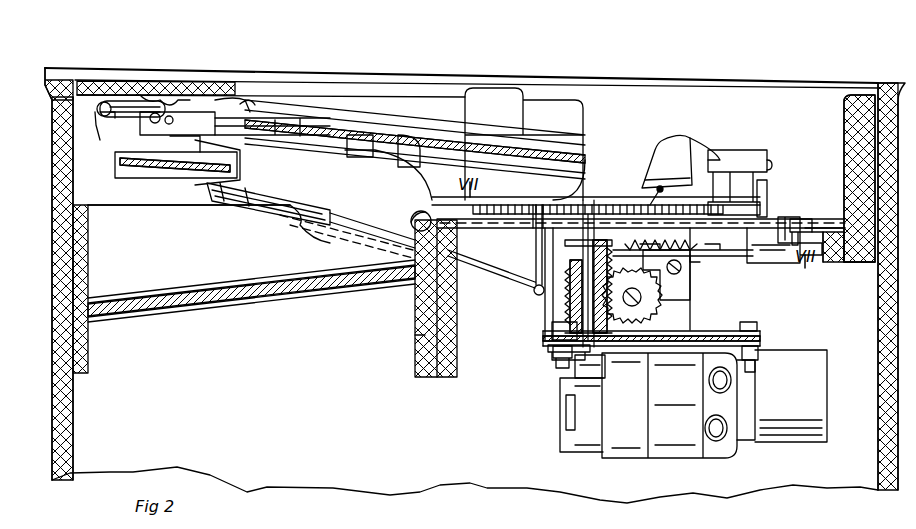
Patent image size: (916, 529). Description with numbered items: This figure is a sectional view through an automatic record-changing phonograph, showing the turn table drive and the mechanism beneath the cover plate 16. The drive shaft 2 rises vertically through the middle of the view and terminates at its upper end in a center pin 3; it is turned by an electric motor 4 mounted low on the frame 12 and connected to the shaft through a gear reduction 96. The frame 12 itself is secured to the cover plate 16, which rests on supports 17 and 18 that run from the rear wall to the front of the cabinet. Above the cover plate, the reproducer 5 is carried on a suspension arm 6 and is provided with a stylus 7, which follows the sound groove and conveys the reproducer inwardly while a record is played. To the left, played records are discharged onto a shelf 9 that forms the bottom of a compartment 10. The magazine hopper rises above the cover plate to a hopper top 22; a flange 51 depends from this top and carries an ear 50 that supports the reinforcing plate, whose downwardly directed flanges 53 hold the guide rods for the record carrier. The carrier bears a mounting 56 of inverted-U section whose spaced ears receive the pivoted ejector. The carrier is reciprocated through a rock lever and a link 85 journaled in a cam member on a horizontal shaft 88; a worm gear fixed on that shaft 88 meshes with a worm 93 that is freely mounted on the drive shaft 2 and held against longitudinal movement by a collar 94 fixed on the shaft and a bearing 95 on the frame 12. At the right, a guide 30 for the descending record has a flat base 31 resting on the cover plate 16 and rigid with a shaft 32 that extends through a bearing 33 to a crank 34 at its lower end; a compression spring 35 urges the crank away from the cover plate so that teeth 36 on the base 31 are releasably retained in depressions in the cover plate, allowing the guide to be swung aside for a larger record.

The drive shaft 2 is at (565, 250).
The center pin 3 is at (588, 197).
The electric motor 4 is at (615, 418).
The reproducer 5 is at (672, 160).
The suspension arm 6 is at (728, 160).
The stylus 7 is at (648, 195).
The shelf 9 is at (218, 300).
The compartment 10 is at (189, 235).
The frame 12 is at (718, 332).
The cover plate 16 is at (498, 228).
The support 17 is at (457, 330).
The support 18 is at (834, 267).
The hopper top 22 is at (248, 100).
The guide 30 is at (765, 205).
The flat base 31 is at (803, 238).
The shaft 32 is at (792, 222).
The bearing 33 is at (805, 255).
The crank 34 is at (772, 260).
The compression spring 35 is at (790, 232).
The teeth 36 is at (782, 218).
The ear 50 is at (138, 100).
The flange 51 is at (182, 100).
The downwardly directed flanges 53 is at (100, 130).
The mounting 56 is at (235, 121).
The link 85 is at (283, 205).
The horizontal shaft 88 is at (658, 297).
The worm 93 is at (578, 305).
The collar 94 is at (535, 285).
The bearing 95 is at (590, 360).
The gear reduction 96 is at (578, 396).